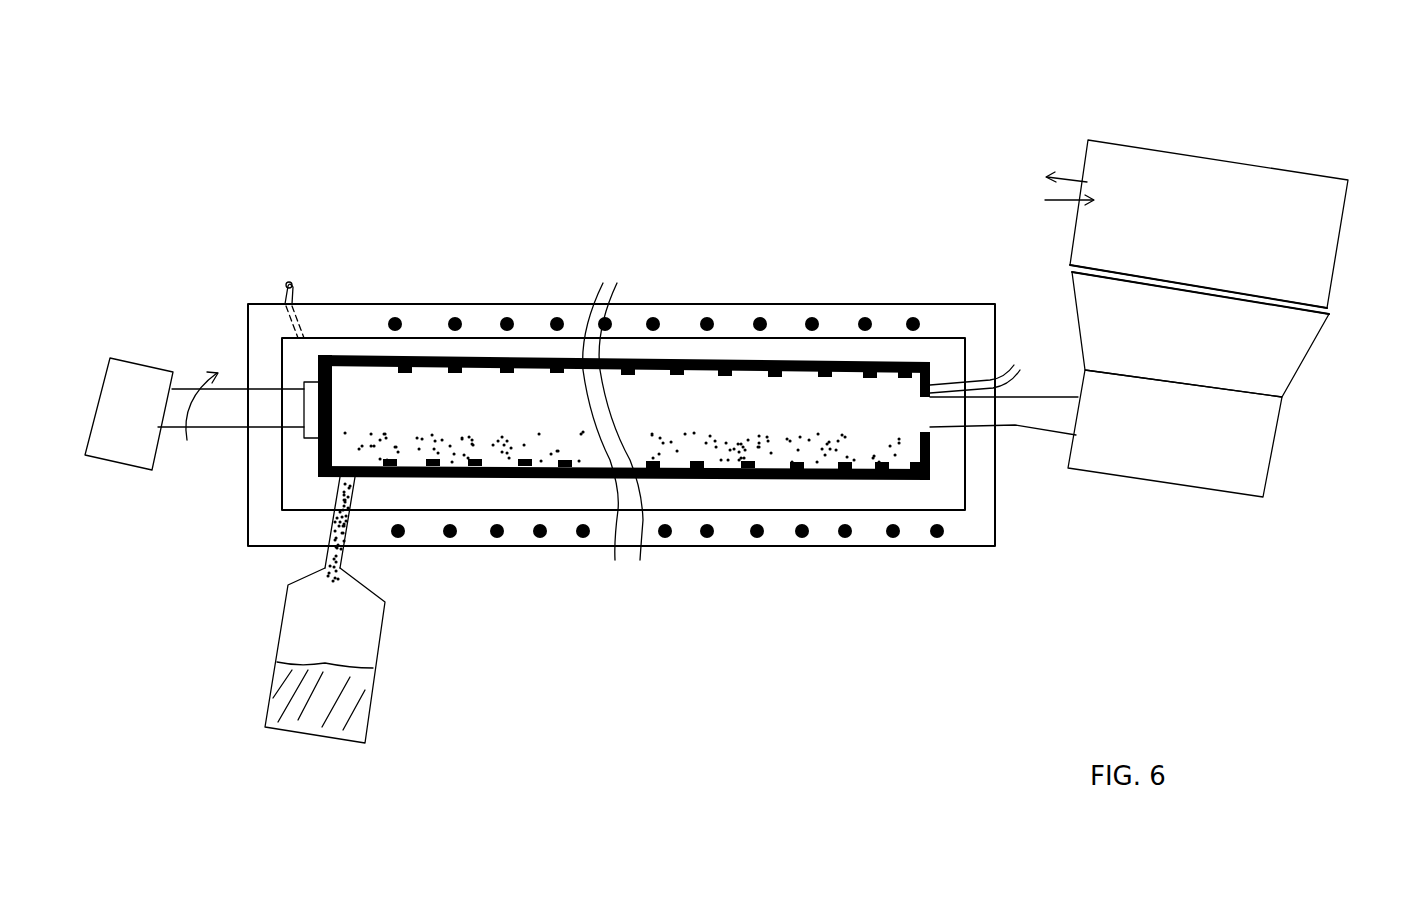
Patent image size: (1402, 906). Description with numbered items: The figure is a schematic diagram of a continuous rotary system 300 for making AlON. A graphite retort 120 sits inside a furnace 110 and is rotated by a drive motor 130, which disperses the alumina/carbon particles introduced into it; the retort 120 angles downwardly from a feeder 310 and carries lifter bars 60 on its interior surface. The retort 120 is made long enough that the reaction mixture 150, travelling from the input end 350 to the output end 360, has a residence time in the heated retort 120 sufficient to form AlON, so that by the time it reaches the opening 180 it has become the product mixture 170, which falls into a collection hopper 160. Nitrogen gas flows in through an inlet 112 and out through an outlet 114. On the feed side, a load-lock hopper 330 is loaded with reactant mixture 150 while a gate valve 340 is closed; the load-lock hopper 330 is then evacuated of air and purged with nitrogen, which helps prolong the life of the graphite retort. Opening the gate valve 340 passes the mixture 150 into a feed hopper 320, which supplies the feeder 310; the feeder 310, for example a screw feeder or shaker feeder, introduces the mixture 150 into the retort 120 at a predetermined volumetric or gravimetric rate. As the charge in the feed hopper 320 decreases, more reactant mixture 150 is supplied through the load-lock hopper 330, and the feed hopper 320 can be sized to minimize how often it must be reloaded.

The continuous rotary system 300 is at (748, 58).
The furnace 110 is at (862, 546).
The inlet 112 is at (1022, 365).
The outlet 114 is at (295, 292).
The graphite retort 120 is at (670, 363).
The drive motor 130 is at (133, 460).
The reaction mixture 150 is at (930, 480).
The collection hopper 160 is at (383, 633).
The product mixture 170 is at (467, 478).
The opening 180 is at (333, 482).
The lifter bars 60 is at (905, 455).
The input end 350 is at (935, 366).
The output end 360 is at (318, 458).
The feeder 310 is at (1260, 455).
The feed hopper 320 is at (1290, 358).
The load-lock hopper 330 is at (1325, 240).
The gate valve 340 is at (1328, 310).